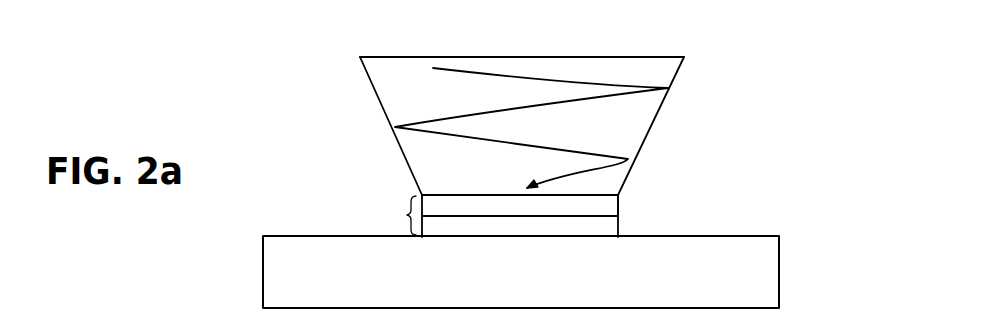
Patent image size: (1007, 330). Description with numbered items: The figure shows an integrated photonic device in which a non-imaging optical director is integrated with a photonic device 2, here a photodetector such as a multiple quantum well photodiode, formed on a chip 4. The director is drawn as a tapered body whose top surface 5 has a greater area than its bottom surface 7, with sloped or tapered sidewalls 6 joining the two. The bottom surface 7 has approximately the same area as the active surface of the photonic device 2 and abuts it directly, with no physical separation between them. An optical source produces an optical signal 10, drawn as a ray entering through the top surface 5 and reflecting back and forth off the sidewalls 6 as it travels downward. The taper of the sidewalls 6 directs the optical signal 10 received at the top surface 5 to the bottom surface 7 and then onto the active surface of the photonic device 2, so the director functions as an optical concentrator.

The photonic device 2 is at (408, 213).
The chip 4 is at (262, 246).
The top surface 5 is at (378, 55).
The sidewalls 6 is at (381, 107).
The bottom surface 7 is at (606, 193).
The optical signal 10 is at (668, 88).